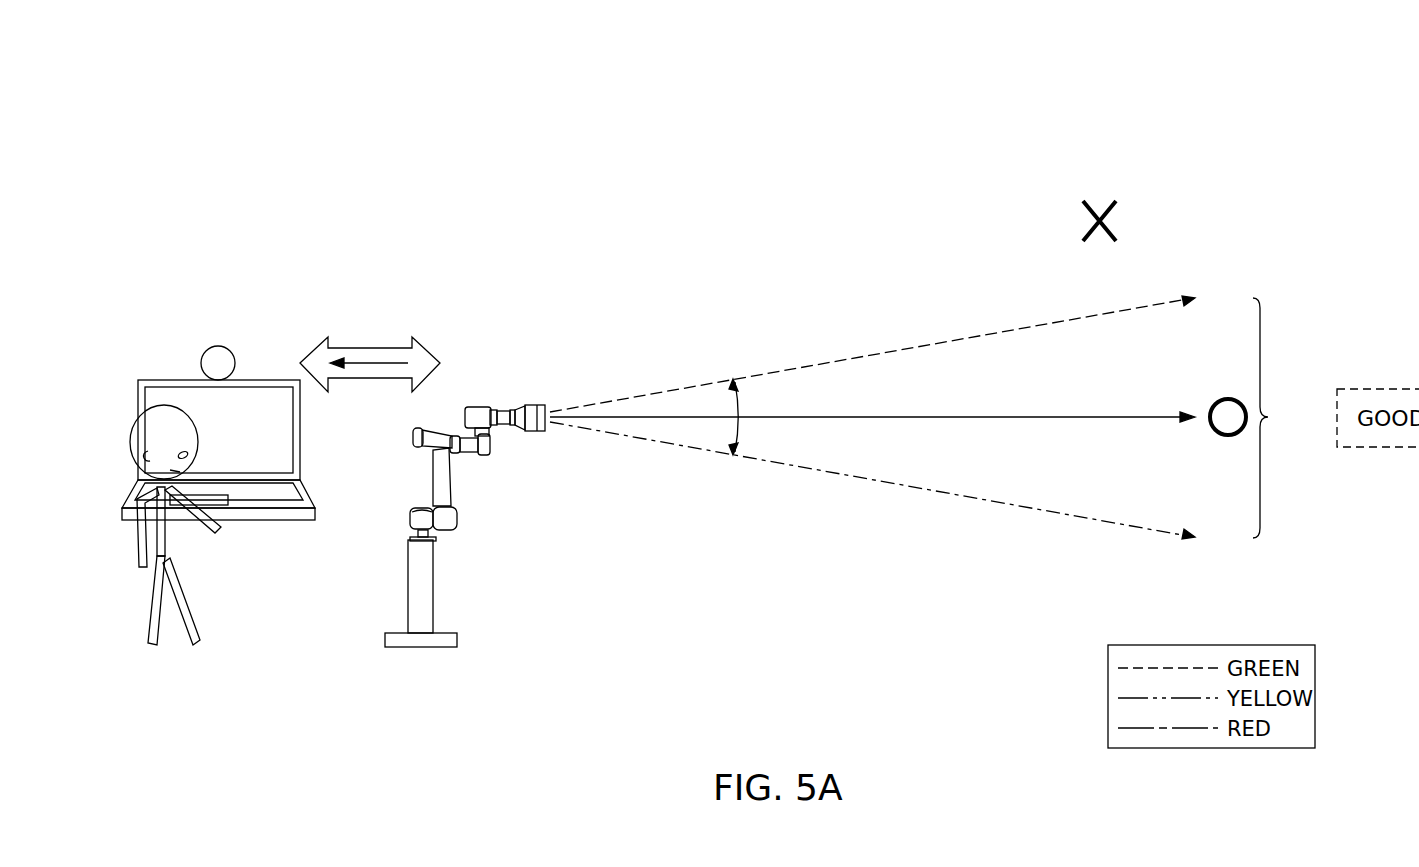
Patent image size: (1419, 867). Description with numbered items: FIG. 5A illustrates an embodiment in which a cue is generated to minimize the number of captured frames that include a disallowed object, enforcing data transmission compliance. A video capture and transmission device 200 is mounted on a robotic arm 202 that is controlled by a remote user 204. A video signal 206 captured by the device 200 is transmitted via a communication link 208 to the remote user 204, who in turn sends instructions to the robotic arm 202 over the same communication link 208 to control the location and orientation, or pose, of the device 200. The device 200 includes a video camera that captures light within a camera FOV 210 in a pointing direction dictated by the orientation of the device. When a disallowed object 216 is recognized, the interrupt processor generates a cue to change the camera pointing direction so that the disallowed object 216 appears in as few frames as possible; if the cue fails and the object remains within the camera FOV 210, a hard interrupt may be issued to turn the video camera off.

The video capture and transmission device 200 is at (526, 406).
The robotic arm 202 is at (433, 478).
The remote user 204 is at (143, 371).
The video signal 206 is at (367, 360).
The communication link 208 is at (302, 356).
The camera FOV 210 is at (1263, 418).
The disallowed object 216 is at (1120, 218).